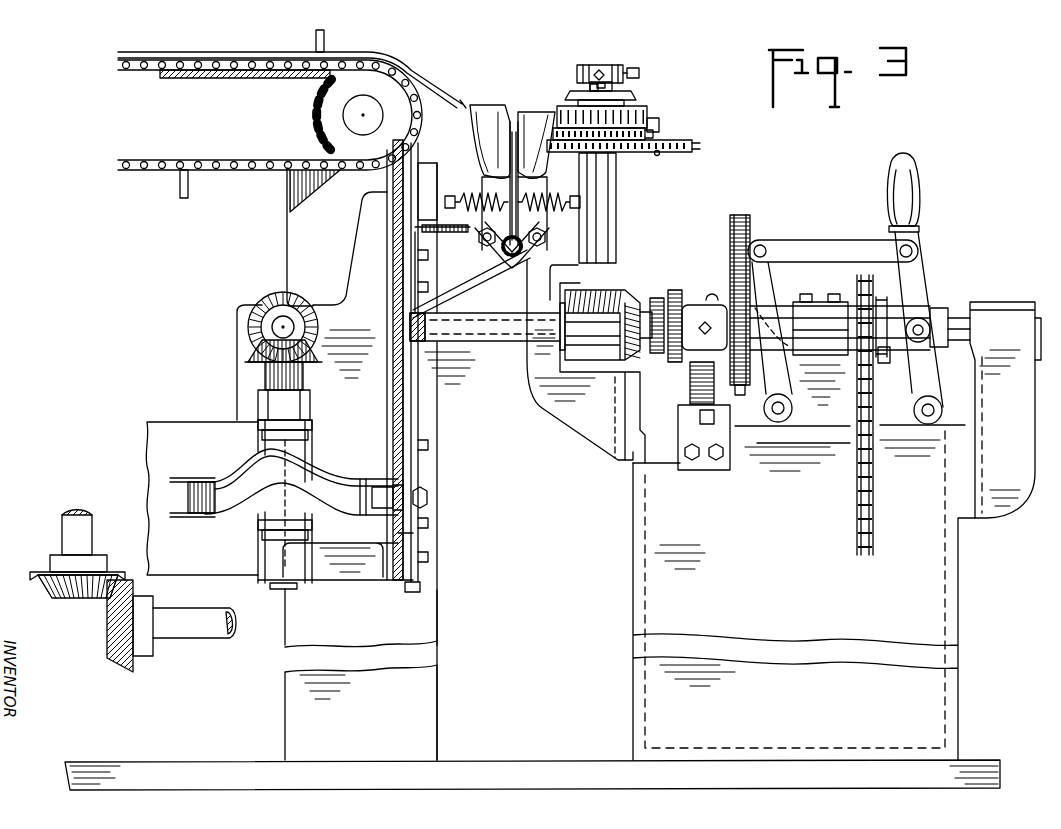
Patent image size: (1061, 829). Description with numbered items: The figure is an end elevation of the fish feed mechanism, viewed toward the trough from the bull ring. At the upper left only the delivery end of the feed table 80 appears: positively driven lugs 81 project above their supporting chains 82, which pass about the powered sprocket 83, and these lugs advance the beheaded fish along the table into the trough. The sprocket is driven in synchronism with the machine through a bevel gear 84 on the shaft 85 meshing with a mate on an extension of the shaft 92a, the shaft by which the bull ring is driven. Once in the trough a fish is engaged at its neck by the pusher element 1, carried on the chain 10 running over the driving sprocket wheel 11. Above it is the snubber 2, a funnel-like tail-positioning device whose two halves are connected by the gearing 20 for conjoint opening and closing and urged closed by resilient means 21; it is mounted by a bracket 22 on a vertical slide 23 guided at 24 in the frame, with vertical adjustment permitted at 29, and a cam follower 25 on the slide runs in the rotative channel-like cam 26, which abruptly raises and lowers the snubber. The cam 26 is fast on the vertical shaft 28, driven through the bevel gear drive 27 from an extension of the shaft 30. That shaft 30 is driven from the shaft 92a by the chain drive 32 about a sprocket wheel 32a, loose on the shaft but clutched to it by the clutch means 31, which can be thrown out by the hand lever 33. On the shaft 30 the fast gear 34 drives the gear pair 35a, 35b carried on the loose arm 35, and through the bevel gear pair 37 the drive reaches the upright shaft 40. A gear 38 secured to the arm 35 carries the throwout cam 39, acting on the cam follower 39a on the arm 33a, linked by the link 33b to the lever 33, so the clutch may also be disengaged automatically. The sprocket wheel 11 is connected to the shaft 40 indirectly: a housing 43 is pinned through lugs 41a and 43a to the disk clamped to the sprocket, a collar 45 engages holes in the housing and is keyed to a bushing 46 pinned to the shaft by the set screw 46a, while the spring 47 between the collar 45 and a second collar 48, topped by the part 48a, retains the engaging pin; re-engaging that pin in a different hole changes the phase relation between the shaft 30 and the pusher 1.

The pusher element 1 is at (502, 142).
The snubber 2 is at (530, 110).
The chain 10 is at (660, 151).
The sprocket wheel 11 is at (612, 160).
The gearing 20 is at (507, 260).
The resilient means 21 is at (470, 200).
The bracket 22 is at (546, 359).
The vertical slide 23 is at (420, 392).
The guide 24 is at (396, 296).
The cam follower 25 is at (412, 494).
The cam 26 is at (246, 512).
The bevel gear drive 27 is at (316, 300).
The vertical shaft 28 is at (283, 590).
The vertical adjustment 29 is at (438, 282).
The shaft 30 is at (960, 312).
The clutch means 31 is at (885, 360).
The chain drive 32 is at (874, 475).
The sprocket wheel 32a is at (880, 300).
The hand lever 33 is at (916, 193).
The arm 33a is at (764, 380).
The link 33b is at (830, 246).
The gear 34 is at (677, 292).
The arm 35 is at (706, 308).
The gear 35a is at (678, 290).
The gear 35b is at (656, 296).
The bevel gear pair 37 is at (616, 305).
The gear 38 is at (734, 285).
The throwout cam 39 is at (768, 320).
The cam follower 39a is at (815, 304).
The upright shaft 40 is at (610, 66).
The lug 41a is at (654, 136).
The housing 43 is at (650, 116).
The lug 43a is at (662, 126).
The collar 45 is at (645, 103).
The bushing 46 is at (590, 88).
The set screw 46a is at (638, 76).
The spring 47 is at (635, 95).
The second collar 48 is at (588, 82).
The pin 48a is at (599, 70).
The feed table 80 is at (428, 82).
The lugs 81 is at (325, 40).
The chains 82 is at (170, 72).
The sprocket 83 is at (318, 120).
The bevel gear 84 is at (110, 617).
The shaft 85 is at (80, 530).
The shaft 92a is at (212, 635).